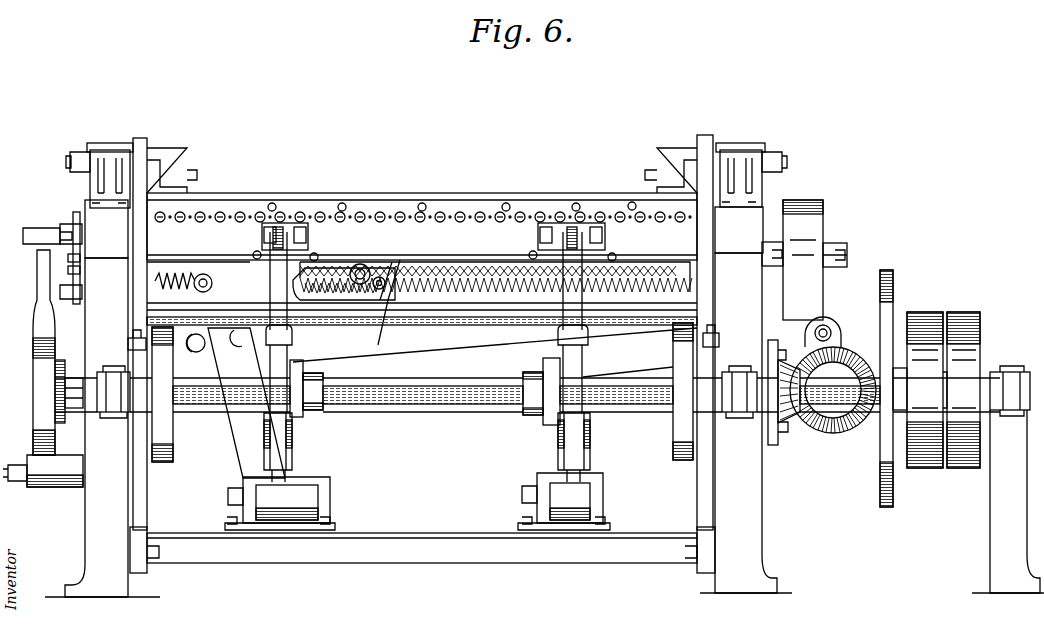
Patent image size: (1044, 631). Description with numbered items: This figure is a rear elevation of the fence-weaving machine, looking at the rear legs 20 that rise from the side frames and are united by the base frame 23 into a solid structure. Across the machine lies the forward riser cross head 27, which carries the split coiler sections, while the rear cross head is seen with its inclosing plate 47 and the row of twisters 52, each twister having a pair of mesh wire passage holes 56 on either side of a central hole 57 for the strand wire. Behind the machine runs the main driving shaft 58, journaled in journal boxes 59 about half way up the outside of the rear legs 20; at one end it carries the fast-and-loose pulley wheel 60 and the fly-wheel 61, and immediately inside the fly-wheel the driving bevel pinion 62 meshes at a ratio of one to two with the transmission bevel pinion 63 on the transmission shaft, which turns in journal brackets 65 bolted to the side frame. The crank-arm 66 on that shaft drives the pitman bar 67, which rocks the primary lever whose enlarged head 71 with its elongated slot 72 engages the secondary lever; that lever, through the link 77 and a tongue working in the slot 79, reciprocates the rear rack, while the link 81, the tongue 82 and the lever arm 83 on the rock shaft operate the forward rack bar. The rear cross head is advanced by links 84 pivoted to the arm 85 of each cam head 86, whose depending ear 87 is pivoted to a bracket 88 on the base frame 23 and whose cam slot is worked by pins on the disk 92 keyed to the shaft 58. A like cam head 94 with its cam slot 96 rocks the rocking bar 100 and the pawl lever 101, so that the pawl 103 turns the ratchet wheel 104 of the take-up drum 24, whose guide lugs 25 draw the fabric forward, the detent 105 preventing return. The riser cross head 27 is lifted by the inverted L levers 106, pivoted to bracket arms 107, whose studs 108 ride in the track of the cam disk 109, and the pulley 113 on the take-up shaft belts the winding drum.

The rear legs 20 is at (418, 425).
The base frame 23 is at (422, 550).
The take-up drum 24 is at (170, 290).
The guide lugs 25 is at (196, 290).
The forward riser cross head 27 is at (400, 192).
The inclosing plate 47 is at (302, 212).
The twisters 52 is at (483, 223).
The mesh wire passage holes 56 is at (642, 222).
The central hole 57 is at (470, 222).
The main driving shaft 58 is at (455, 395).
The journal boxes 59 is at (113, 412).
The fast-and-loose pulley wheel 60 is at (935, 312).
The fly-wheel 61 is at (893, 270).
The driving bevel pinion 62 is at (792, 425).
The transmission bevel pinion 63 is at (842, 350).
The journal brackets 65 is at (773, 445).
The crank-arm 66 is at (832, 322).
The pitman bar 67 is at (495, 352).
The enlarged head 71 is at (243, 338).
The elongated slot 72 is at (190, 355).
The link 77 is at (106, 229).
The slot 79 is at (30, 238).
The link 81 is at (312, 292).
The tongue 82 is at (380, 325).
The lever arm 83 is at (232, 432).
The links 84 is at (260, 240).
The arm 85 is at (317, 253).
The cam head 86 is at (280, 362).
The depending ear 87 is at (288, 478).
The bracket 88 is at (312, 492).
The disk 92 is at (305, 372).
The cam head 94 is at (33, 355).
The cam slot 96 is at (55, 380).
The rocking bar 100 is at (82, 296).
The pawl lever 101 is at (70, 224).
The pawl 103 is at (76, 210).
The ratchet wheel 104 is at (80, 272).
The detent 105 is at (80, 262).
The inverted L levers 106 is at (165, 165).
The bracket arm 107 is at (108, 148).
The stud or roller 108 is at (128, 345).
The cam disk 109 is at (160, 466).
The pulley 113 is at (826, 212).